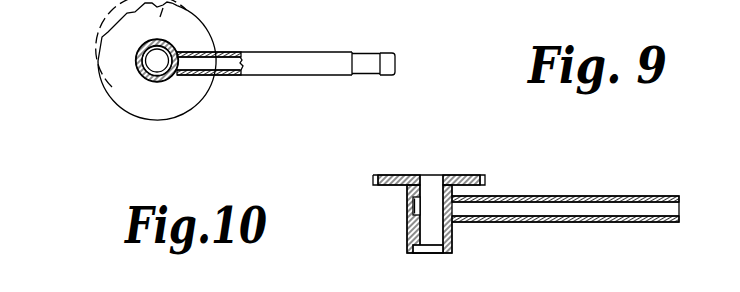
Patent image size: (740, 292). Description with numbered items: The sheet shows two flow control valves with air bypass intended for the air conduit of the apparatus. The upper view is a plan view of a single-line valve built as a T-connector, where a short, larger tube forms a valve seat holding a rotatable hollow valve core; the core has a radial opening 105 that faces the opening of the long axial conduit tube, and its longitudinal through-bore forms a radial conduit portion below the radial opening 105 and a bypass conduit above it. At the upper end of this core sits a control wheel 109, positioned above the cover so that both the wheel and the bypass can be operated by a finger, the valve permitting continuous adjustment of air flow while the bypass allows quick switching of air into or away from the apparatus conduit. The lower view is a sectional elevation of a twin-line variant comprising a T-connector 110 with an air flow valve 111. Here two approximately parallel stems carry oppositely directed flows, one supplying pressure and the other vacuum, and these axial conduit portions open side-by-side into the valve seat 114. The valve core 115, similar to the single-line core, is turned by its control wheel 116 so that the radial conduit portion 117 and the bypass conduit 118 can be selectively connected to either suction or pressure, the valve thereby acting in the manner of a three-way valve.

In FIG. 9, the radial opening 105 is at (167, 61).
In FIG. 9, the control wheel 109 is at (127, 78).
In FIG. 10, the T-connector 110 is at (458, 223).
In FIG. 10, the air flow valve 111 is at (451, 209).
In FIG. 10, the valve seat 114 is at (408, 213).
In FIG. 10, the valve core 115 is at (418, 248).
In FIG. 10, the control wheel 116 is at (398, 175).
In FIG. 10, the radial conduit portion 117 is at (428, 235).
In FIG. 10, the bypass conduit 118 is at (428, 182).